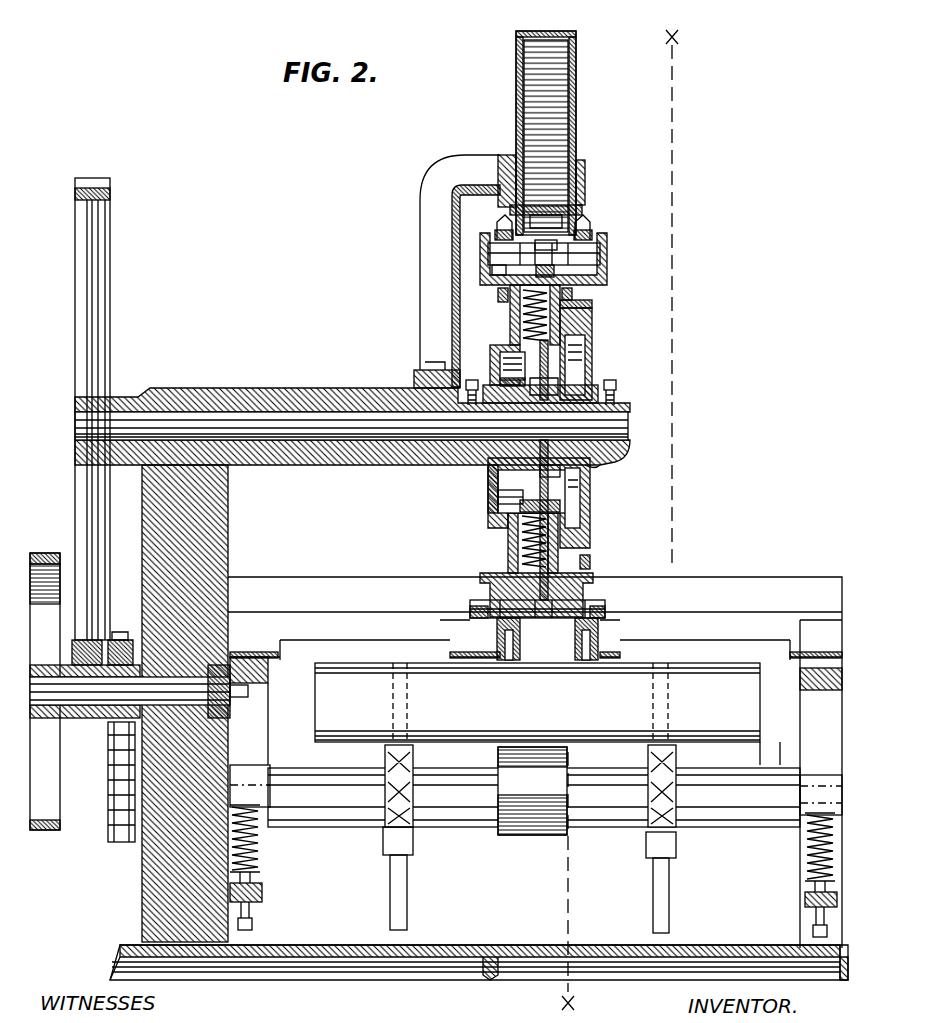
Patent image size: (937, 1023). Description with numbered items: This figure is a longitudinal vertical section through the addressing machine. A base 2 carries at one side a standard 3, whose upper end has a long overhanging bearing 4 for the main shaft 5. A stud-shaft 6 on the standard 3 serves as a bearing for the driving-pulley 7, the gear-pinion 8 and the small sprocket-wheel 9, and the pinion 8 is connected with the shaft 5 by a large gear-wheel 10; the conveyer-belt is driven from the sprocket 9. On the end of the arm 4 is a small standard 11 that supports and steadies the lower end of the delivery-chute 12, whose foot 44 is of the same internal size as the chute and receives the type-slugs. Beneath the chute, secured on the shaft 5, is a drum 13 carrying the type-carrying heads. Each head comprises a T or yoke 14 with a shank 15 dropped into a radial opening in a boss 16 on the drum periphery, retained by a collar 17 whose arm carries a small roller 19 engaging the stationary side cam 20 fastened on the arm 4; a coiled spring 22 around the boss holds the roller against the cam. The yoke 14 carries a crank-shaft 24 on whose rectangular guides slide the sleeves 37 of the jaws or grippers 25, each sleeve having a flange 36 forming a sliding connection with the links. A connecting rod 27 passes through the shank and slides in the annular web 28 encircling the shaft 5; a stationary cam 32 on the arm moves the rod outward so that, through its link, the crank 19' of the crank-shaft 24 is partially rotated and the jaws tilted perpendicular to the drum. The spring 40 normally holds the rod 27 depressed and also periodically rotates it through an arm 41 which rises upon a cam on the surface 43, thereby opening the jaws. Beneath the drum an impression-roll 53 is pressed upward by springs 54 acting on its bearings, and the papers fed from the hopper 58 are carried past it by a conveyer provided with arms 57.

The base 2 is at (472, 947).
The standard 3 is at (142, 890).
The overhanging bearing 4 is at (305, 392).
The main shaft 5 is at (252, 412).
The stud-shaft 6 is at (85, 712).
The driving-pulley 7 is at (45, 832).
The gear-pinion 8 is at (102, 758).
The small sprocket-wheel 9 is at (120, 632).
The large gear-wheel 10 is at (100, 318).
The small standard 11 is at (447, 255).
The delivery-chute 12 is at (552, 128).
The drum 13 is at (596, 357).
The T or yoke 14 is at (600, 277).
The shank 15 is at (590, 300).
The boss 16 is at (592, 312).
The collar 17 is at (592, 338).
The small roller 19 is at (577, 498).
The crank 19' is at (555, 249).
The stationary side cam 20 is at (500, 355).
The coiled spring 22 is at (500, 301).
The crank-shaft 24 is at (604, 253).
The jaws or grippers 25 is at (502, 223).
The connecting rod or stem 27 is at (548, 397).
The annular web 28 is at (598, 386).
The stationary cam 32 is at (598, 466).
The flange 36 is at (492, 271).
The sleeve 37 is at (445, 625).
The spring 40 is at (510, 330).
The arm 41 is at (500, 370).
The surface 43 is at (488, 481).
The foot 44 is at (580, 208).
The impression-roll 53 is at (528, 838).
The springs 54 is at (261, 860).
The arms 57 is at (407, 890).
The hopper 58 is at (728, 587).